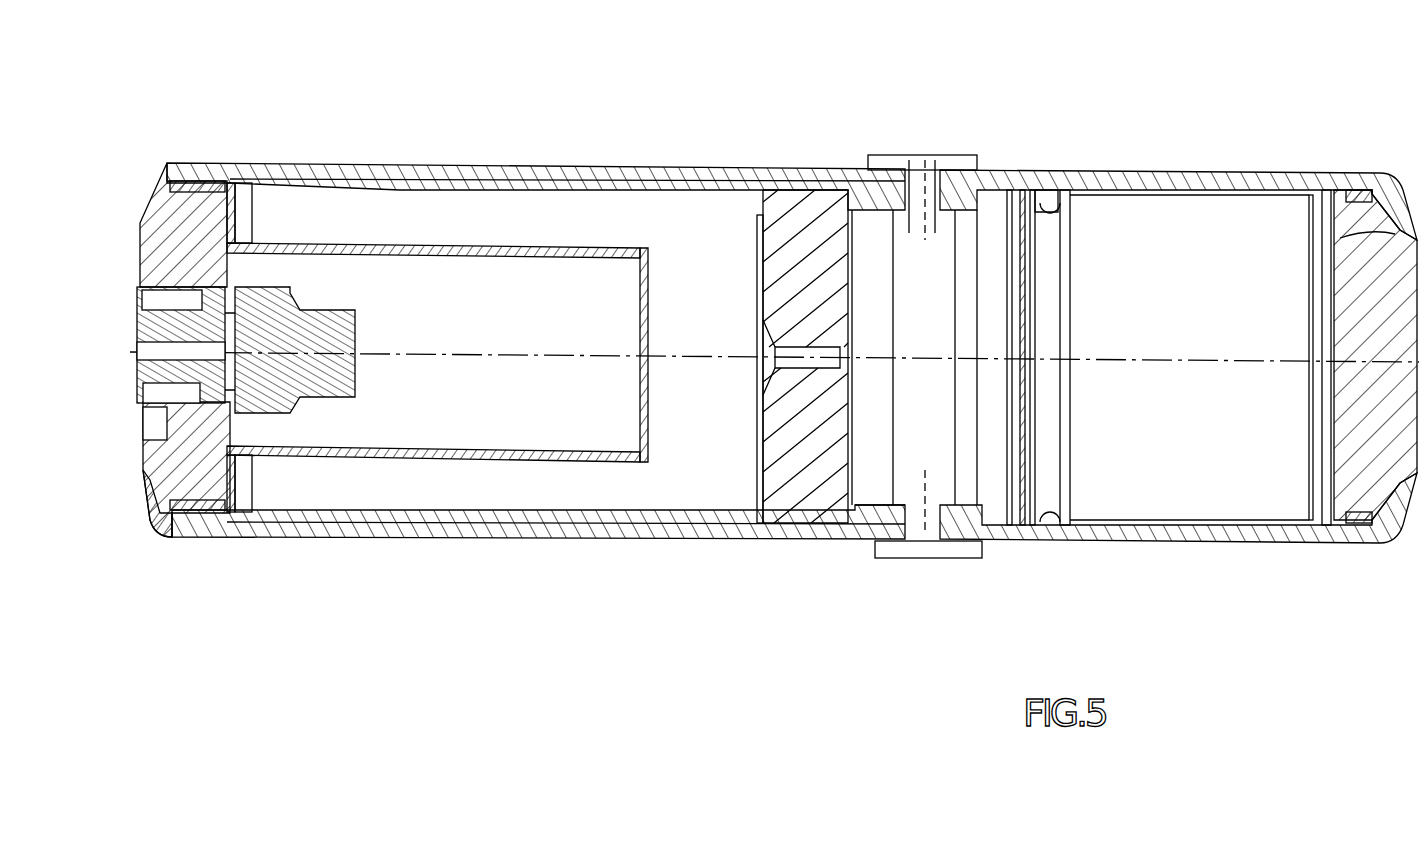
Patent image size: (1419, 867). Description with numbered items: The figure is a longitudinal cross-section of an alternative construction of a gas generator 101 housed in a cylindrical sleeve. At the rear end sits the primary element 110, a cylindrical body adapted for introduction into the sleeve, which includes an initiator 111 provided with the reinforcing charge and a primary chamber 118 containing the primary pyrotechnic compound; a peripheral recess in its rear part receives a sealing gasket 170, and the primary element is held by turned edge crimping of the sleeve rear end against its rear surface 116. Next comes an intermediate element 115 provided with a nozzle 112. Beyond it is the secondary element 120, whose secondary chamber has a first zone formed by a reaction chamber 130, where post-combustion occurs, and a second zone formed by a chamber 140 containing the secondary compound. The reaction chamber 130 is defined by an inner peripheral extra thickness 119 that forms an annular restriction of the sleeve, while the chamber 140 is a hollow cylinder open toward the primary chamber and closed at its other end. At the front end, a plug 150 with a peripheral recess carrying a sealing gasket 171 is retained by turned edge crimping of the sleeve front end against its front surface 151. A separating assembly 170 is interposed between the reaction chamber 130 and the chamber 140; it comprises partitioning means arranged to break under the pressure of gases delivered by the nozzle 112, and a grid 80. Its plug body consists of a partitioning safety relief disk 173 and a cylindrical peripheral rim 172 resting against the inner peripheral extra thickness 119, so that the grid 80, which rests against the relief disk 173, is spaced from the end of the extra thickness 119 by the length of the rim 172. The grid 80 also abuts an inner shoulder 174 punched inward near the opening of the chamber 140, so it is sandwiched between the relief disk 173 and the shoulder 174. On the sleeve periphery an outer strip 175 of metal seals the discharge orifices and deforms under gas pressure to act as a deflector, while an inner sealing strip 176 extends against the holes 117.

The grid 80 is at (1032, 402).
The gas generator 101 is at (543, 143).
The primary element 110 is at (638, 165).
The initiator 111 is at (168, 332).
The nozzle 112 is at (773, 357).
The intermediate element 115 is at (778, 213).
The rear surface 116 is at (145, 205).
The holes 117 is at (875, 542).
The primary chamber 118 is at (378, 243).
The inner peripheral extra thickness 119 is at (850, 200).
The secondary element 120 is at (1093, 499).
The reaction chamber 130 is at (933, 233).
The chamber containing the secondary compound 140 is at (1133, 247).
The plug 150 is at (1340, 238).
The front surface 151 is at (1393, 172).
The separating assembly 170 is at (208, 177).
The sealing gasket 171 is at (1332, 172).
The cylindrical peripheral rim 172 is at (1030, 527).
The partitioning safety relief disk 173 is at (1037, 338).
The inner shoulder 174 is at (1050, 507).
The outer strip 175 is at (915, 558).
The inner sealing strip 176 is at (924, 357).